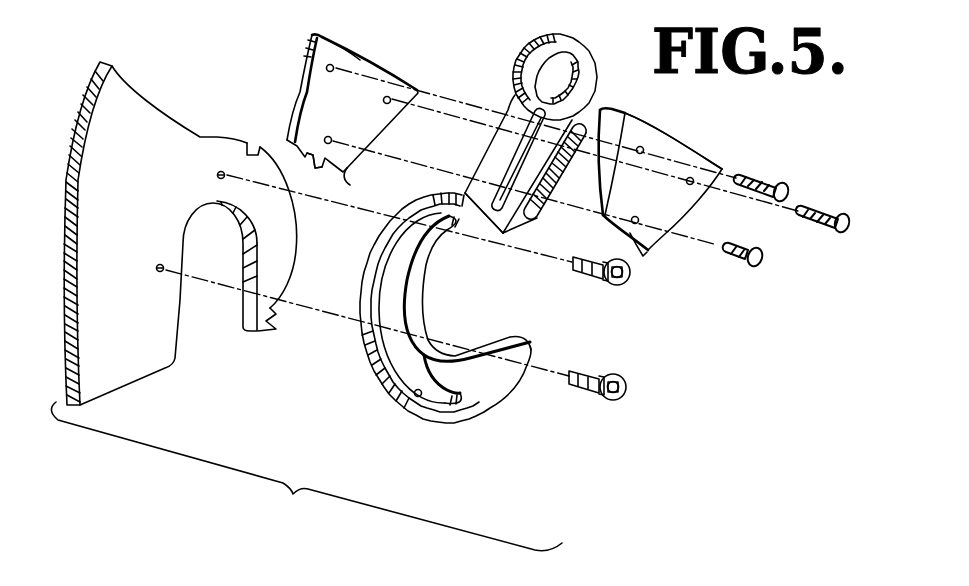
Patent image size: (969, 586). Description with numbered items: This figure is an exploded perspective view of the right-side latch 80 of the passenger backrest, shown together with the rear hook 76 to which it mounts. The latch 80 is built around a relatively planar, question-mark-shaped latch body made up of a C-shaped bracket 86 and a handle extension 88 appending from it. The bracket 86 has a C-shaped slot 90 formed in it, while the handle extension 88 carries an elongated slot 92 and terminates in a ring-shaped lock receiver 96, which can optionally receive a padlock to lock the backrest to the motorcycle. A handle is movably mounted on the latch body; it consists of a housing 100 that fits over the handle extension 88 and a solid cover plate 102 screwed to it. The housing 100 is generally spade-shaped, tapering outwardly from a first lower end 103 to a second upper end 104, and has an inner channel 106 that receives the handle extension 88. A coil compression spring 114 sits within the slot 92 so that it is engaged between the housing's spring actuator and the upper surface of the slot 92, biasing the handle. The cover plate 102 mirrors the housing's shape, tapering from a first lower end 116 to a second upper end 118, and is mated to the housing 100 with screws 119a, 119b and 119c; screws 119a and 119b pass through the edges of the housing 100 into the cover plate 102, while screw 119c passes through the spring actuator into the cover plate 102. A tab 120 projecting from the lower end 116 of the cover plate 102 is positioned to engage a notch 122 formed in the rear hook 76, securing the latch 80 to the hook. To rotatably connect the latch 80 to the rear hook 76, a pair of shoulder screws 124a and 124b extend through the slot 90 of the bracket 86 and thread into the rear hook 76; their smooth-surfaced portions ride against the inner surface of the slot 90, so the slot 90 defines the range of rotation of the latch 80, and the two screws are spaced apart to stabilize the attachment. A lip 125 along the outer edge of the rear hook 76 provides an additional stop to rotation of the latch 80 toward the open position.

The rear hook 76 is at (198, 144).
The notch 122 is at (253, 147).
The lip 125 is at (276, 329).
The cover plate 102 is at (360, 85).
The second upper end 118 is at (343, 50).
The first lower end 116 is at (350, 185).
The tab 120 is at (319, 168).
The right-side latch 80 is at (453, 46).
The handle extension 88 is at (513, 115).
The lock receiver 96 is at (547, 55).
The elongated slot 92 is at (512, 167).
The coil compression spring 114 is at (517, 210).
The inner channel 106 is at (566, 203).
The housing 100 is at (665, 149).
The second upper end 104 is at (656, 113).
The first lower end 103 is at (638, 248).
The screw 119a is at (786, 182).
The screw 119b is at (848, 213).
The screw 119c is at (764, 257).
The shoulder screw 124a is at (606, 403).
The shoulder screw 124b is at (609, 284).
The C-shaped bracket 86 is at (486, 400).
The C-shaped slot 90 is at (416, 395).